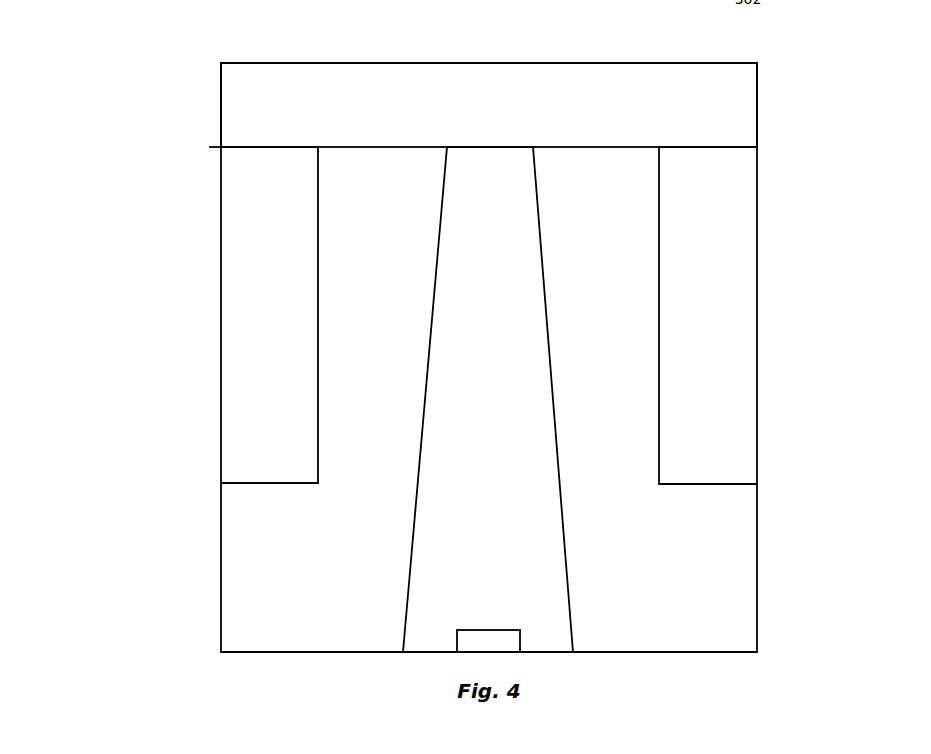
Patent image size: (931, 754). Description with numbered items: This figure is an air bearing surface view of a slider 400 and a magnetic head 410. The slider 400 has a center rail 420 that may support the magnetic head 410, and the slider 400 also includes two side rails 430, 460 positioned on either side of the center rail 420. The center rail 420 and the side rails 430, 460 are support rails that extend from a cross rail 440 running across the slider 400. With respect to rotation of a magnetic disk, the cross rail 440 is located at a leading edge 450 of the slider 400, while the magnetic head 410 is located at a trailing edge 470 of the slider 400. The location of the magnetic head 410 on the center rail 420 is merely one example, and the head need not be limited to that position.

The slider 400 is at (78, 602).
The magnetic head 410 is at (478, 640).
The center rail 420 is at (458, 473).
The side rail 430 is at (264, 283).
The cross rail 440 is at (266, 95).
The leading edge 450 is at (296, 63).
The side rail 460 is at (735, 307).
The trailing edge 470 is at (659, 652).